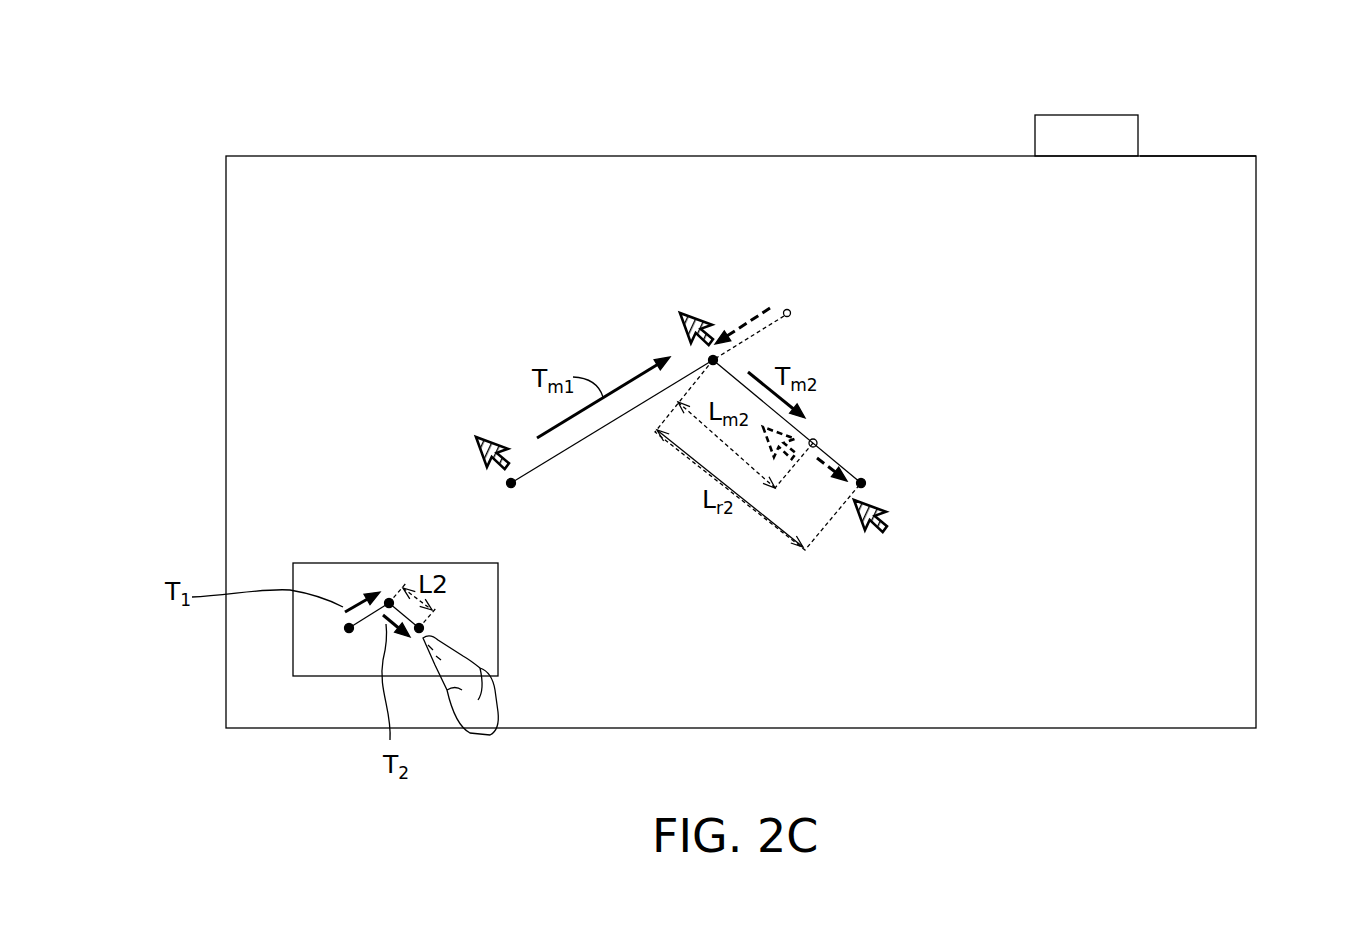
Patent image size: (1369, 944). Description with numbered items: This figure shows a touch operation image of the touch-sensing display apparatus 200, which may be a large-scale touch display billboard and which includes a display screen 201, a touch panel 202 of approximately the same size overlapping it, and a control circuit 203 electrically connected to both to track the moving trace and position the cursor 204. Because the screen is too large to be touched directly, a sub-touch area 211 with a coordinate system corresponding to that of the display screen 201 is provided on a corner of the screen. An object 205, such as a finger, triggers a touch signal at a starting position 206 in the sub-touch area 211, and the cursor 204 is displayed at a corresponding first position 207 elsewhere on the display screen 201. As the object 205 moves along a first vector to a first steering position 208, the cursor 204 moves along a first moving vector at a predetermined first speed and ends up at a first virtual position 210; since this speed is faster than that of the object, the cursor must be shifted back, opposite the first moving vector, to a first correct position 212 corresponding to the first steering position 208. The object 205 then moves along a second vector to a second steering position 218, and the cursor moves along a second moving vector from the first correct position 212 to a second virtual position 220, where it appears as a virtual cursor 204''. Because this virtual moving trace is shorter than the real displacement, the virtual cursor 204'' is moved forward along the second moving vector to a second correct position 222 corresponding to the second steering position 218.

The touch-sensing display apparatus 200 is at (192, 63).
The display screen 201 is at (1223, 202).
The touch panel 202 is at (1203, 153).
The control circuit 203 is at (1107, 148).
The cursor 204 is at (678, 422).
The virtual cursor 204'' is at (817, 514).
The object 205 is at (485, 733).
The starting position 206 is at (349, 628).
The first position 207 is at (511, 483).
The first steering position 208 is at (391, 600).
The first virtual position 210 is at (790, 309).
The sub-touch area 211 is at (333, 677).
The first correct position 212 is at (713, 360).
The second steering position 218 is at (423, 628).
The second virtual position 220 is at (815, 441).
The second correct position 222 is at (865, 483).